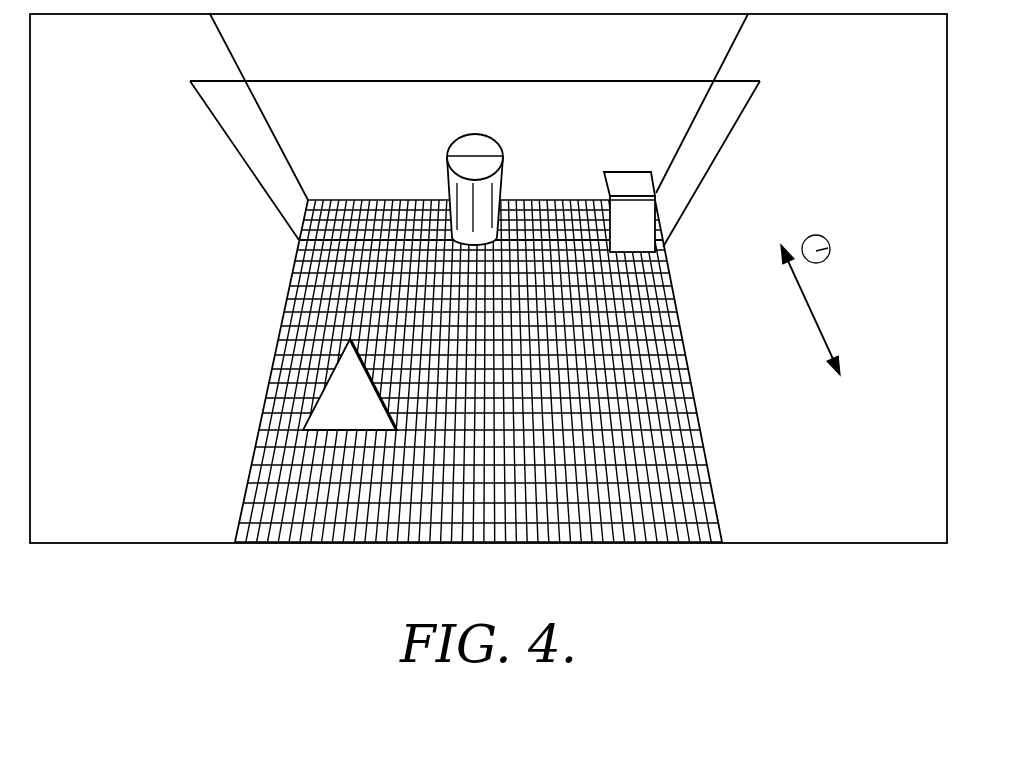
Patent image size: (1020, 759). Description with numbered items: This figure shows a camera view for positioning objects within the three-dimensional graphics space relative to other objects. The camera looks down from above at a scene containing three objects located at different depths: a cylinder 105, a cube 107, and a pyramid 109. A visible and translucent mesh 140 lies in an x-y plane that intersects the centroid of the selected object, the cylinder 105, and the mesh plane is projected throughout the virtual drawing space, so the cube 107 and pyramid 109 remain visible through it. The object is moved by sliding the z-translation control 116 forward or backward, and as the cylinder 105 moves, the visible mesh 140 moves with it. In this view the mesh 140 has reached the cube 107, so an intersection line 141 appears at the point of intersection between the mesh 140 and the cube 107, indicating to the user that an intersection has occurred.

The visible mesh 140 is at (563, 80).
The cylinder 105 is at (493, 134).
The cube 107 is at (628, 180).
The intersection line 141 is at (672, 193).
The pyramid 109 is at (347, 398).
The z-translation control 116 is at (817, 235).